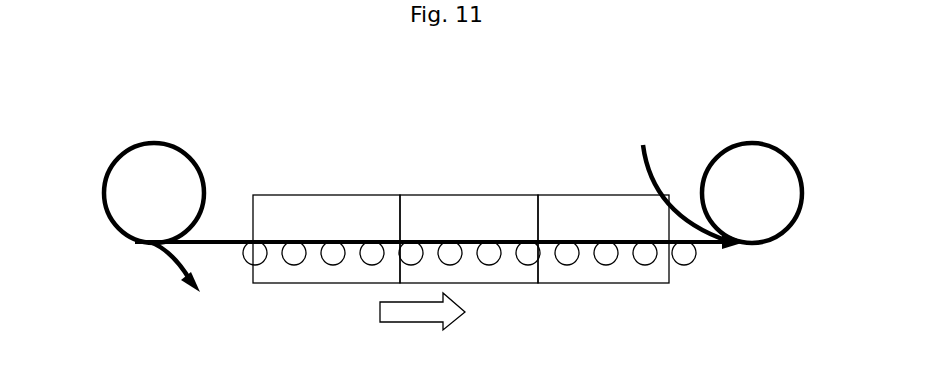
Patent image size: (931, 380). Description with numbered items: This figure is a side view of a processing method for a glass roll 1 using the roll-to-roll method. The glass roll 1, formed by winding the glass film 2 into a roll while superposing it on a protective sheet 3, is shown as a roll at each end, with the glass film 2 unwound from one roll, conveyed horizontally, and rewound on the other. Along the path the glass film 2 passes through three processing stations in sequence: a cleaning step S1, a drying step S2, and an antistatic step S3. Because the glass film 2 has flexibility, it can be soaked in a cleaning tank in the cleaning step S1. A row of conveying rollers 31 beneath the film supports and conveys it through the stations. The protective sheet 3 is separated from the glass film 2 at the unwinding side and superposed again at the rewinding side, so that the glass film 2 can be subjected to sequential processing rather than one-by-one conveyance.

The glass roll 1 is at (168, 163).
The glass film 2 is at (210, 242).
The protective sheet 3 is at (172, 258).
The conveying rollers 31 is at (490, 258).
The cleaning step S1 is at (313, 208).
The drying step S2 is at (440, 208).
The antistatic step S3 is at (565, 210).